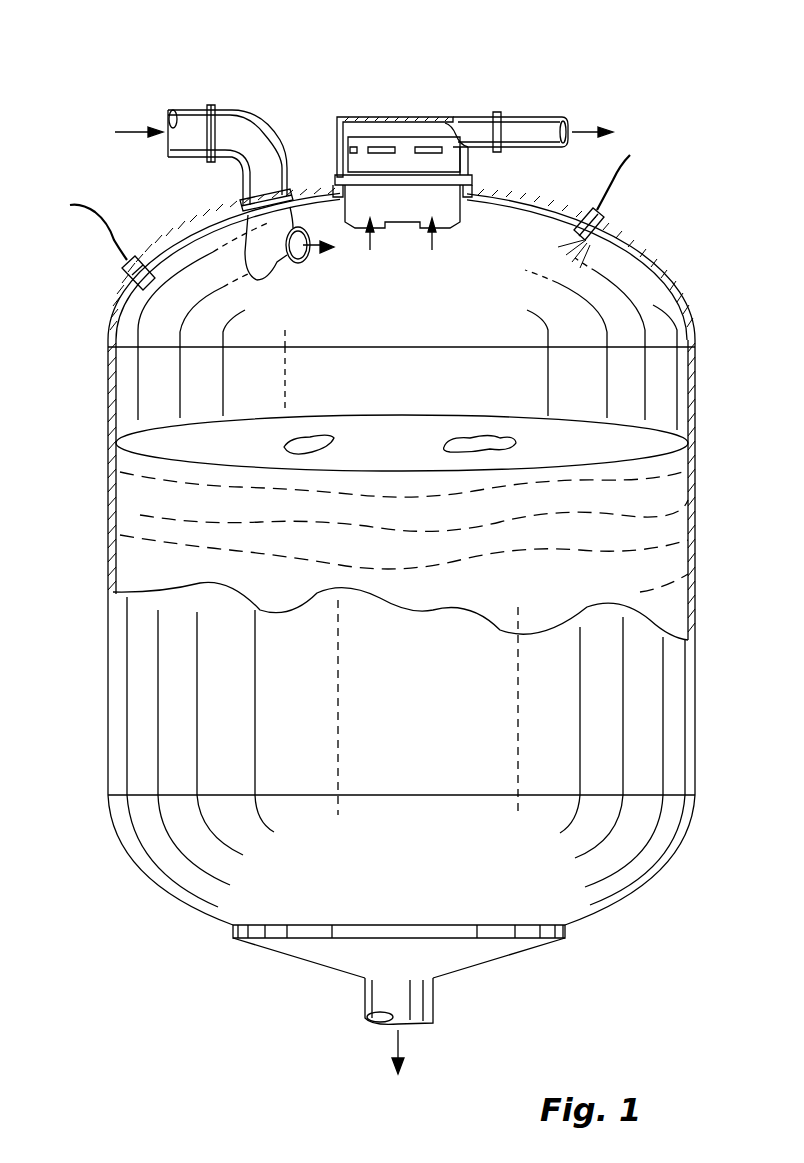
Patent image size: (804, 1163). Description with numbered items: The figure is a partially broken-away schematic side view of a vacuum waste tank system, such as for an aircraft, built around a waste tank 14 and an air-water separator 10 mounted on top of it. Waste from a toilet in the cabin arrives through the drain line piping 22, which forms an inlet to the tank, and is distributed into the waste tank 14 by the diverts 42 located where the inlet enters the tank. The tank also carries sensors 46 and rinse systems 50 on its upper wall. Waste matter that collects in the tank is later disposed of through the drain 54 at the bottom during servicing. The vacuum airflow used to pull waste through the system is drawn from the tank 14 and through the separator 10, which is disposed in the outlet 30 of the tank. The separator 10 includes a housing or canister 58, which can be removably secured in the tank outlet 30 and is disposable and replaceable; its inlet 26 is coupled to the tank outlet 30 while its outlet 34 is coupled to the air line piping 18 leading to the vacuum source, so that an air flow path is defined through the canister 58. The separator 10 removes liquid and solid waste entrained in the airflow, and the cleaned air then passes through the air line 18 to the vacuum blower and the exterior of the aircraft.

The separator 10 is at (376, 108).
The waste tank 14 is at (680, 293).
The piping 18 is at (515, 115).
The piping 22 is at (233, 108).
The inlet 26 is at (380, 233).
The outlet 30 is at (473, 200).
The outlet 34 is at (347, 152).
The diverts 42 is at (240, 250).
The sensors 46 is at (132, 272).
The rinse systems 50 is at (603, 221).
The drain 54 is at (438, 1005).
The canister 58 is at (408, 153).